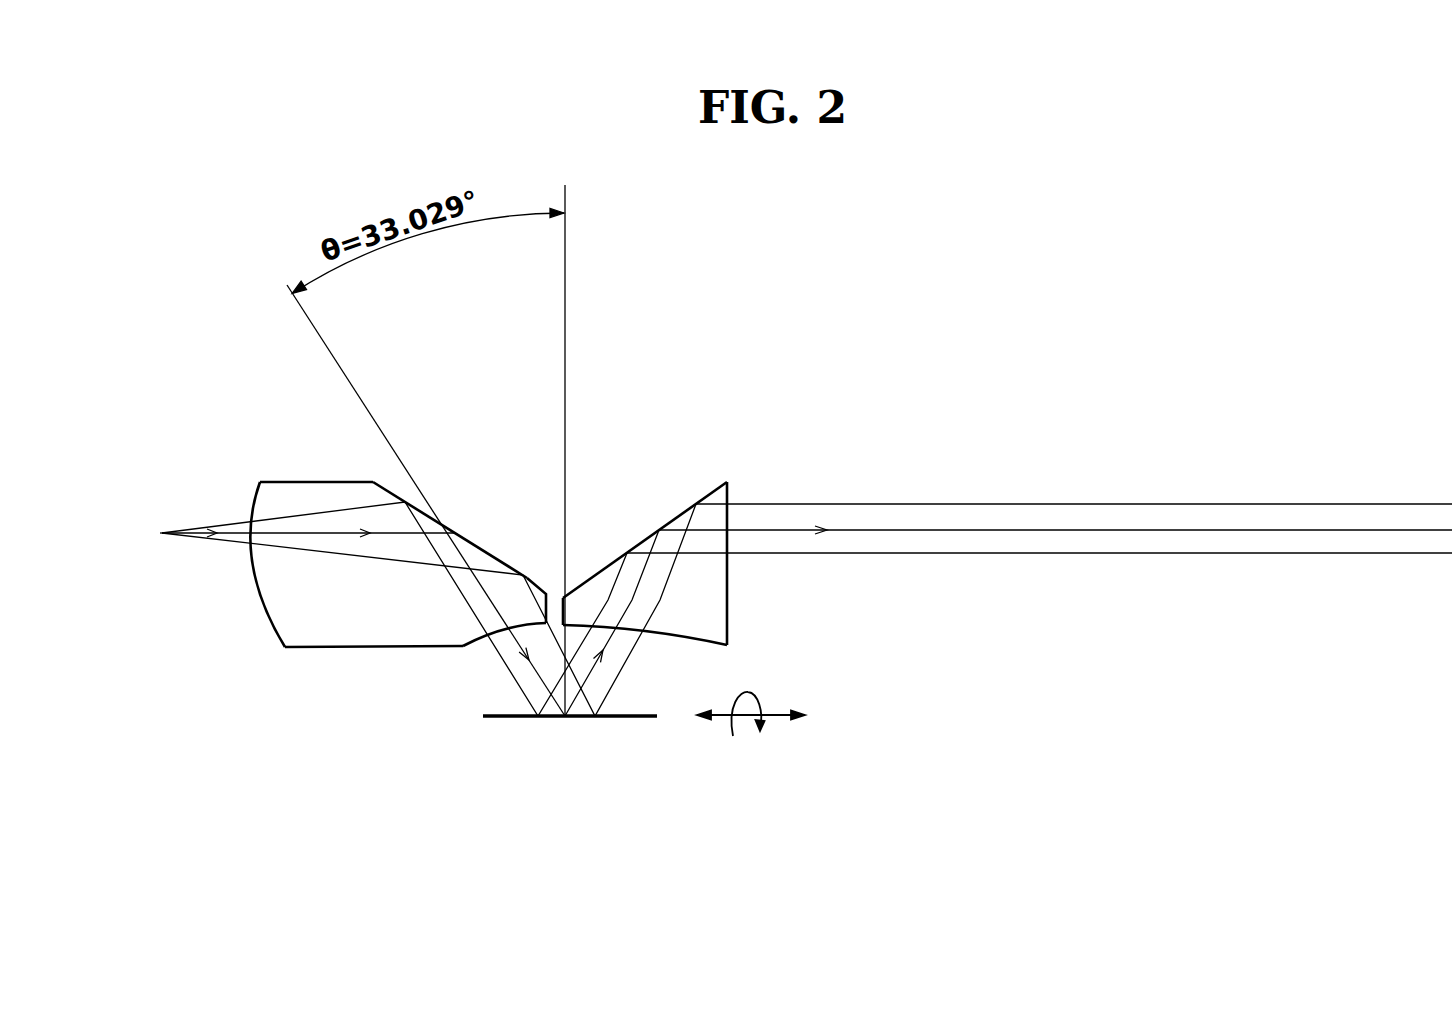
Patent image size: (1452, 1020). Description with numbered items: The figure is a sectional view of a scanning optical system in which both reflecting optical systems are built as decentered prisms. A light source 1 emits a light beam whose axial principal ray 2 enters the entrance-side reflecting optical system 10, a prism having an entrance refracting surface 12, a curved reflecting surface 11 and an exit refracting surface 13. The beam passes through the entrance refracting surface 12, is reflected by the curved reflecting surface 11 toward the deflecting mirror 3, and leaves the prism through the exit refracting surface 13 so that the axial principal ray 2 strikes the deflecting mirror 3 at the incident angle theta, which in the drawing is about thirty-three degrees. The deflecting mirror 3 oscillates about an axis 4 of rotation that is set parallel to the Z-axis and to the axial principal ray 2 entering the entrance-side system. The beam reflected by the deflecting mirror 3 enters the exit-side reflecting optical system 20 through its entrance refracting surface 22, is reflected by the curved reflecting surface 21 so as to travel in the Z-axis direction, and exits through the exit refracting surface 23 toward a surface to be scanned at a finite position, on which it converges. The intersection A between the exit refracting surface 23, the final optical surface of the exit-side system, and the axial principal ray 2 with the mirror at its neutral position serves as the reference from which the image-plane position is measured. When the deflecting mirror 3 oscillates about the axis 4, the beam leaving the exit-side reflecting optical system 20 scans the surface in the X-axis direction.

The light source 1 is at (162, 536).
The axial principal ray 2 is at (230, 536).
The deflecting mirror 3 is at (587, 718).
The axis of rotation 4 is at (777, 720).
The entrance-side reflecting optical system 10 is at (378, 539).
The curved reflecting surface 11 is at (457, 523).
The entrance refracting surface 12 is at (267, 612).
The exit refracting surface 13 is at (500, 633).
The exit-side reflecting optical system 20 is at (699, 547).
The curved reflecting surface 21 is at (622, 552).
The entrance refracting surface 22 is at (675, 633).
The exit refracting surface 23 is at (727, 595).
The intersection A is at (730, 518).